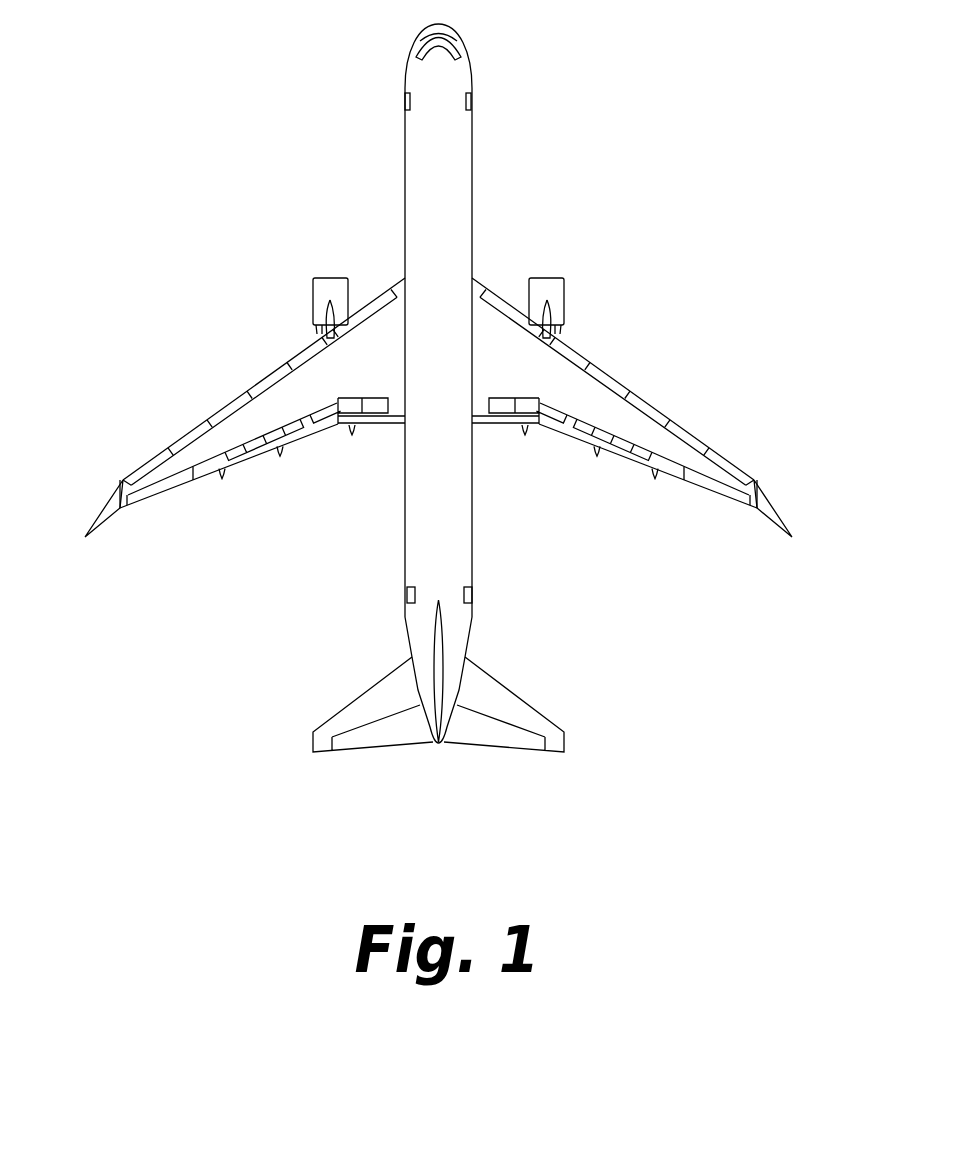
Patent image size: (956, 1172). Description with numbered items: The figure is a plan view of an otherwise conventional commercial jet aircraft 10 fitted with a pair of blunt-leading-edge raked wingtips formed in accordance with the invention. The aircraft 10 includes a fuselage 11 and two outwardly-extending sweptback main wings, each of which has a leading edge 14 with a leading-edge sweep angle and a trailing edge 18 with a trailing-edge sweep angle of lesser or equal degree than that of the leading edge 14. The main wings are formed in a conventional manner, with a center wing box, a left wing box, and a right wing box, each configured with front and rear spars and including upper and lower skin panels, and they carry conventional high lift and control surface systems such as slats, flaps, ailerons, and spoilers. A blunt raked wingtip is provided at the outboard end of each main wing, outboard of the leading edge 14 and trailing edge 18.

The jet aircraft 10 is at (627, 131).
The fuselage 11 is at (458, 212).
The leading edge 14 is at (663, 417).
The trailing edge 18 is at (640, 460).